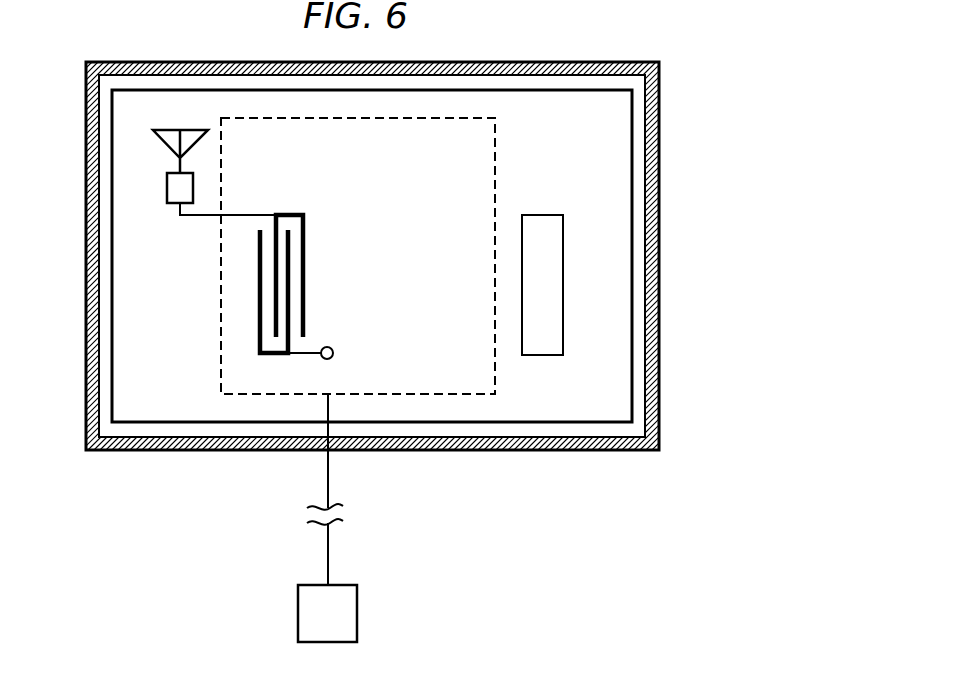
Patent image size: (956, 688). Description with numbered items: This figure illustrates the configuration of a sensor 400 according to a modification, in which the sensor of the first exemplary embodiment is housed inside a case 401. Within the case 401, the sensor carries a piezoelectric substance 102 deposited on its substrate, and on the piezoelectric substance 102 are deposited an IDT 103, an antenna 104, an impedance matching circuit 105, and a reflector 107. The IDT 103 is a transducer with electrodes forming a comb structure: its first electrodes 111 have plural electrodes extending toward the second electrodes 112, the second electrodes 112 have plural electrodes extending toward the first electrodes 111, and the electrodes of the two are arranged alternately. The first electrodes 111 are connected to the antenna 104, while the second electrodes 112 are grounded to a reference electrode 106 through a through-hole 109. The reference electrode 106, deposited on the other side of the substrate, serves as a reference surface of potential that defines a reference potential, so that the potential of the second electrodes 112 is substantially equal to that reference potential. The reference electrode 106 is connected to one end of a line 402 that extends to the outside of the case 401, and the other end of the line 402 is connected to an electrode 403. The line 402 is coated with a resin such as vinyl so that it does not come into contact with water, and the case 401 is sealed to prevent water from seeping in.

The sensor 400 is at (706, 127).
The case 401 is at (645, 217).
The piezoelectric substance 102 is at (632, 298).
The IDT 103 is at (336, 252).
The antenna 104 is at (163, 140).
The impedance matching circuit 105 is at (167, 190).
The reference electrode 106 is at (247, 395).
The reflector 107 is at (545, 213).
The through-hole 109 is at (330, 360).
The first electrodes 111 is at (290, 213).
The second electrodes 112 is at (276, 357).
The line 402 is at (328, 487).
The electrode 403 is at (357, 603).